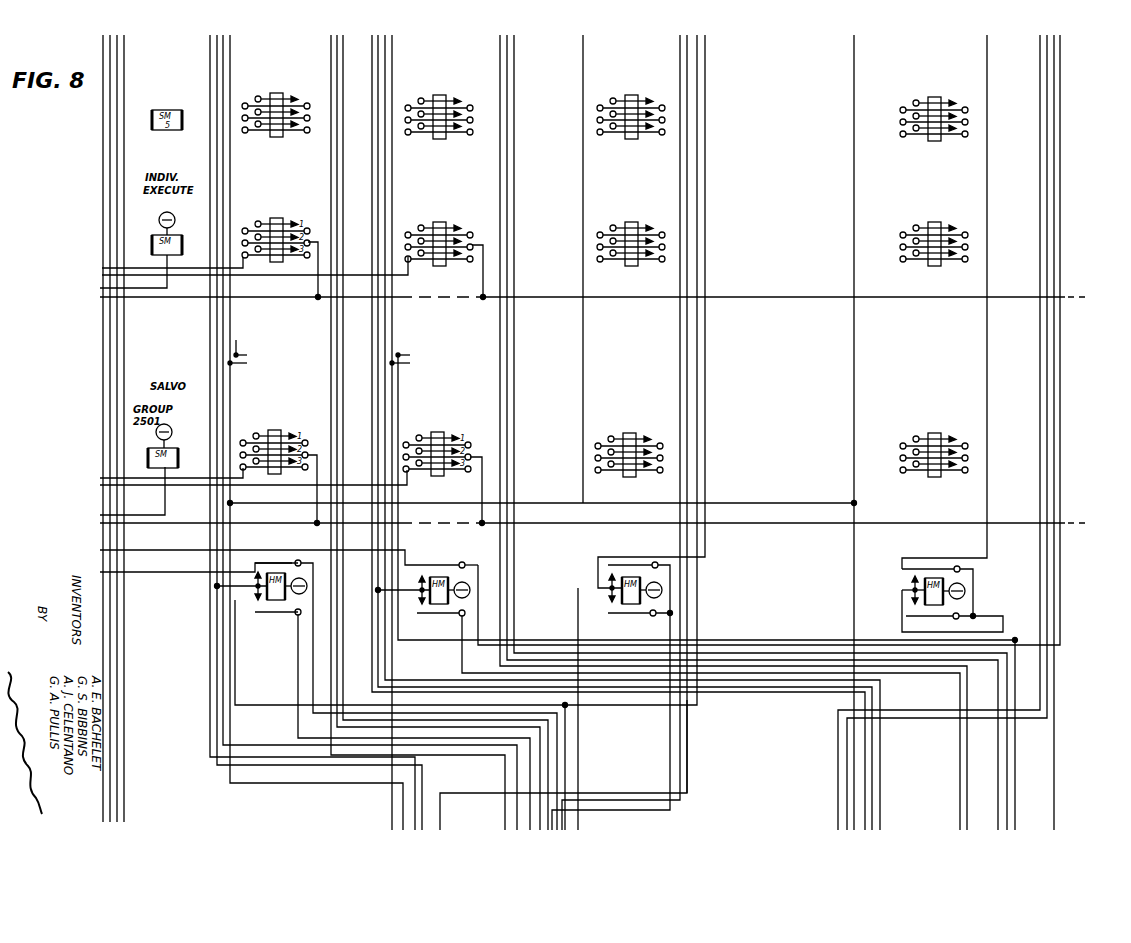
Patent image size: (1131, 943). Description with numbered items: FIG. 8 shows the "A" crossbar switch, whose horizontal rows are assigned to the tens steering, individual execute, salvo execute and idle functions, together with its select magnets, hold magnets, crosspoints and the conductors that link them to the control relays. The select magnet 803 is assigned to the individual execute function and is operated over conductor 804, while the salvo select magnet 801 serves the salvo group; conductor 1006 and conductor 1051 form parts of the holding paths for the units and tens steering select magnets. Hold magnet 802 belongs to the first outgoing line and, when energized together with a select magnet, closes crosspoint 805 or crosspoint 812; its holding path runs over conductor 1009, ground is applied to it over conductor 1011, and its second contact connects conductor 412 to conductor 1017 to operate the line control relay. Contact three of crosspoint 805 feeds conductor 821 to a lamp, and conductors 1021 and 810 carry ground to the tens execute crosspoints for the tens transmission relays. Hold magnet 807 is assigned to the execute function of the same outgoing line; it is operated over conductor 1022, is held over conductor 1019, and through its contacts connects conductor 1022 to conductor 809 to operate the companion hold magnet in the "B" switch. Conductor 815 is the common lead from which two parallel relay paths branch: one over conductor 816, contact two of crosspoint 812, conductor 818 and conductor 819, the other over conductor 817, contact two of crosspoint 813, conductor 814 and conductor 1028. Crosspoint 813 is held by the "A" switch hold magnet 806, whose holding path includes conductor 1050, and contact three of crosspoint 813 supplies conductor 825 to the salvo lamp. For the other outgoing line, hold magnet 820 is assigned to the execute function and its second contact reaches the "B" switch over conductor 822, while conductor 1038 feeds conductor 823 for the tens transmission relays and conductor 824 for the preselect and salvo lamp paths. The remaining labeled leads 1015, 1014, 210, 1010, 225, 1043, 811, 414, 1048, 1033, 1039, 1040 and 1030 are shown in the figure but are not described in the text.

The conductor 1006 is at (118, 72).
The bus line 1015 is at (211, 48).
The bus line 1014 is at (218, 48).
The conductor 1021 is at (231, 72).
The bus line 210 is at (332, 48).
The bus line 1010 is at (344, 72).
The conductor 810 is at (584, 56).
The conductor 809 is at (706, 56).
The conductor 823 is at (853, 56).
The conductor 822 is at (986, 56).
The bus line 225 is at (1061, 56).
The bus line 1043 is at (1056, 77).
The crosspoint 805 is at (275, 218).
The select magnet 803 is at (176, 238).
The conductor 821 is at (192, 267).
The conductor 804 is at (138, 296).
The crosspoint 812 is at (273, 430).
The salvo select magnet 801 is at (174, 452).
The line 811 is at (194, 482).
The conductor 825 is at (152, 490).
The conductor 815 is at (185, 523).
The conductor 816 is at (316, 501).
The line 414 is at (150, 546).
The conductor 412 is at (150, 573).
The crosspoint 813 is at (435, 432).
The conductor 817 is at (481, 490).
The A-switch hold magnet 806 is at (462, 564).
The hold magnet 807 is at (598, 588).
The conductor 1022 is at (577, 613).
The conductor 824 is at (812, 503).
The conductor 1038 is at (853, 550).
The hold magnet 820 is at (902, 590).
The conductor 814 is at (810, 639).
The hold magnet 802 is at (298, 618).
The conductor 818 is at (236, 660).
The conductor 1051 is at (125, 766).
The bus line 1048 is at (104, 812).
The conductor 1009 is at (516, 762).
The conductor 1011 is at (504, 780).
The conductor 1017 is at (566, 735).
The conductor 819 is at (566, 778).
The conductor 1019 is at (679, 756).
The line 1033 is at (688, 789).
The line 1039 is at (873, 791).
The line 1040 is at (866, 813).
The conductor 1050 is at (959, 765).
The line 1030 is at (1003, 768).
The conductor 1028 is at (1016, 813).